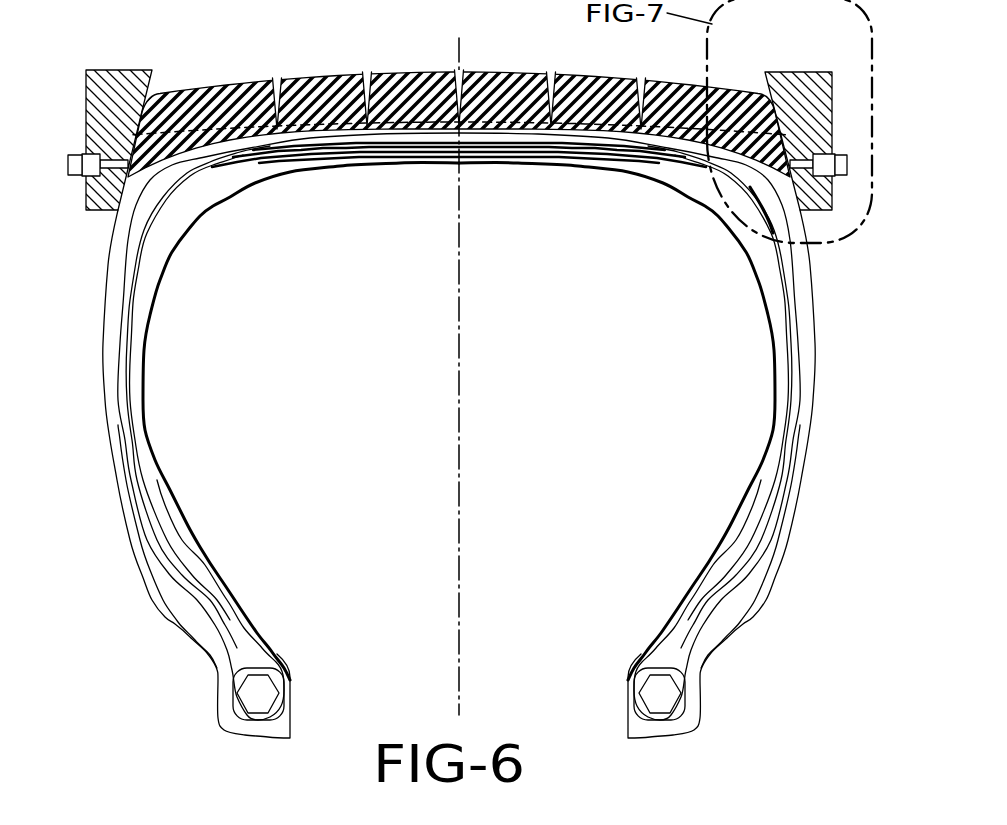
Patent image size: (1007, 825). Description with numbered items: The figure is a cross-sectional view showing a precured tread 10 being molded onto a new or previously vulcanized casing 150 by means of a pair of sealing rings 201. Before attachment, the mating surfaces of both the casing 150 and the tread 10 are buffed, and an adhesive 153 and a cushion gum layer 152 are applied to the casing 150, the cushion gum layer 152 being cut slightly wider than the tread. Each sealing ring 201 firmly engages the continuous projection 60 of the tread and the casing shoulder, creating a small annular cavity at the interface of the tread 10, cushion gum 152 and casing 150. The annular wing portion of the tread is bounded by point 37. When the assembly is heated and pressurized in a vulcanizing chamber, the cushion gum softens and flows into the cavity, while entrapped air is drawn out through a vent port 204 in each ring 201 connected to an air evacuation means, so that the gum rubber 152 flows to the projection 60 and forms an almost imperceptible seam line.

The tread 10 is at (403, 60).
The point 37 is at (176, 134).
The continuous projection 60 is at (131, 160).
The casing 150 is at (99, 388).
The cushion gum layer 152 is at (188, 143).
The adhesive 153 is at (459, 426).
The sealing ring 201 is at (123, 77).
The vent port 204 is at (68, 176).